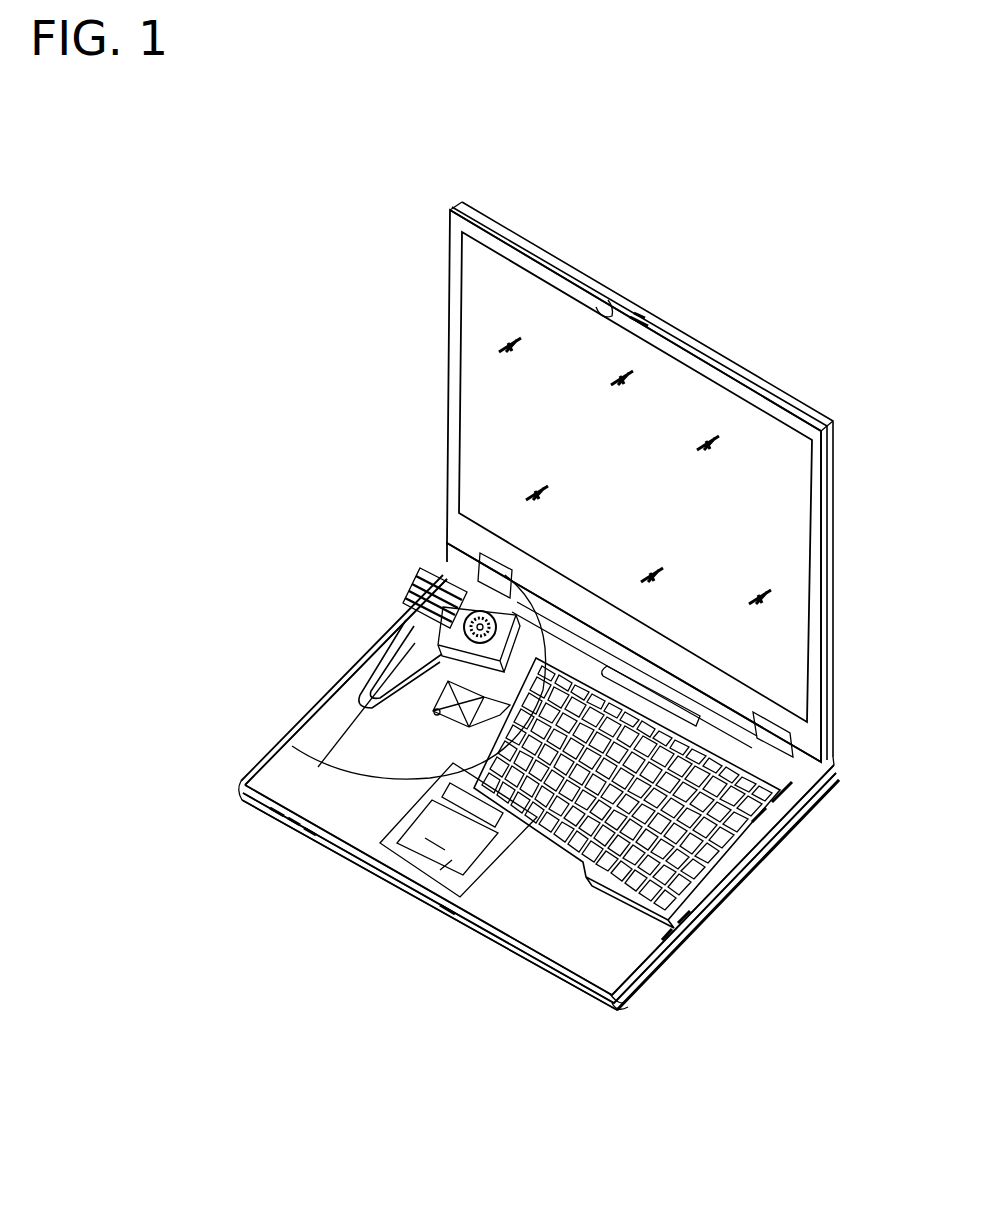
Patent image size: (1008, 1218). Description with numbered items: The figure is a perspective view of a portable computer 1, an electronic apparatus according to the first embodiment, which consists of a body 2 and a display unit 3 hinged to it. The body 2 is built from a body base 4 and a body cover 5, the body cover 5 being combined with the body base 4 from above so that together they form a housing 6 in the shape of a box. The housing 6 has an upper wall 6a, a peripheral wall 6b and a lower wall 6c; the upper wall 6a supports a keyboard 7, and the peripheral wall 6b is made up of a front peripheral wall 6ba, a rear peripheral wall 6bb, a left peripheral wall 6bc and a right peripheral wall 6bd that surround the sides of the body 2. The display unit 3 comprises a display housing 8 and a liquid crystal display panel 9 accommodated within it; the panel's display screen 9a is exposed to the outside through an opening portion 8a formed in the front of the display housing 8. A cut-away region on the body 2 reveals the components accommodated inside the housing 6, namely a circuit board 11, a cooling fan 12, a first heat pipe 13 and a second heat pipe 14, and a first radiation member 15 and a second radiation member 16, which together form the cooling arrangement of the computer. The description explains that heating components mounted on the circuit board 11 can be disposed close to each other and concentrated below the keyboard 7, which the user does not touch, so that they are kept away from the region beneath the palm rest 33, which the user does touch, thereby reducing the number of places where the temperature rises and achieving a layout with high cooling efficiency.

The portable computer 1 is at (284, 344).
The body 2 is at (289, 725).
The display unit 3 is at (444, 346).
The body base 4 is at (766, 852).
The body cover 5 is at (733, 890).
The housing 6 is at (350, 816).
The upper wall 6a is at (553, 948).
The peripheral wall 6b is at (577, 1008).
The front peripheral wall 6ba is at (462, 933).
The rear peripheral wall 6bb is at (834, 765).
The left peripheral wall 6bc is at (380, 632).
The right peripheral wall 6bd is at (708, 923).
The lower wall 6c is at (343, 717).
The keyboard 7 is at (632, 690).
The display housing 8 is at (748, 388).
The opening portion 8a is at (606, 312).
The liquid crystal display panel 9 is at (800, 527).
The display screen 9a is at (635, 471).
The circuit board 11 is at (292, 746).
The cooling fan 12 is at (498, 607).
The first heat pipe 13 is at (450, 713).
The second heat pipe 14 is at (364, 672).
The first radiation member 15 is at (476, 568).
The second radiation member 16 is at (430, 592).
The palm rest 33 is at (624, 990).